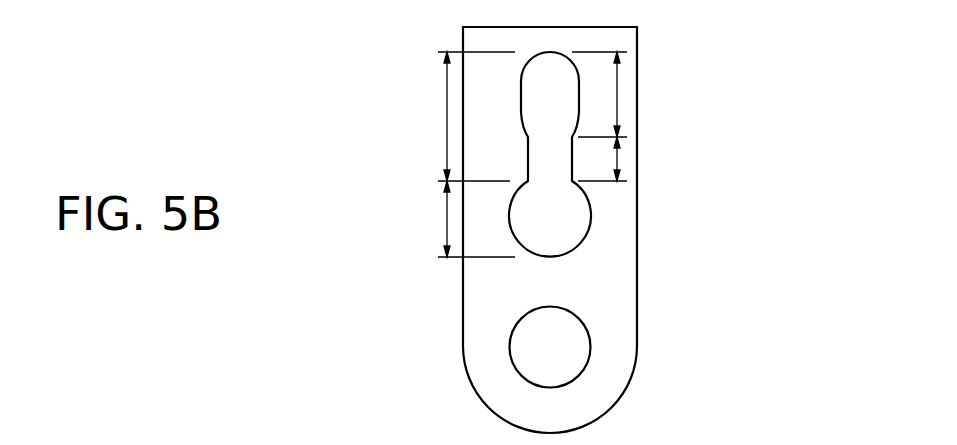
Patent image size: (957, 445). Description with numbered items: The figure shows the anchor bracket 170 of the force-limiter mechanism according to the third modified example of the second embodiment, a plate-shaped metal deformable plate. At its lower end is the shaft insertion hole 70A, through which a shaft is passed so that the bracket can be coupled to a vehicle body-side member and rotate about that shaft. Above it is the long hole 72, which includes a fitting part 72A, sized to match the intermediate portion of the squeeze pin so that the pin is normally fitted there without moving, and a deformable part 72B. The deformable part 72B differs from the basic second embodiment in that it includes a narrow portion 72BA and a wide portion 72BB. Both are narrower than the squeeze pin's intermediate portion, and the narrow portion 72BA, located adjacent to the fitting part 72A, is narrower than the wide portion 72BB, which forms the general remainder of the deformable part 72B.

The anchor bracket 170 is at (744, 83).
The long hole 72 is at (559, 164).
The fitting part 72A is at (451, 219).
The deformable part 72B is at (451, 116).
The narrow portion 72BA is at (617, 158).
The wide portion 72BB is at (617, 93).
The shaft insertion hole 70A is at (586, 354).